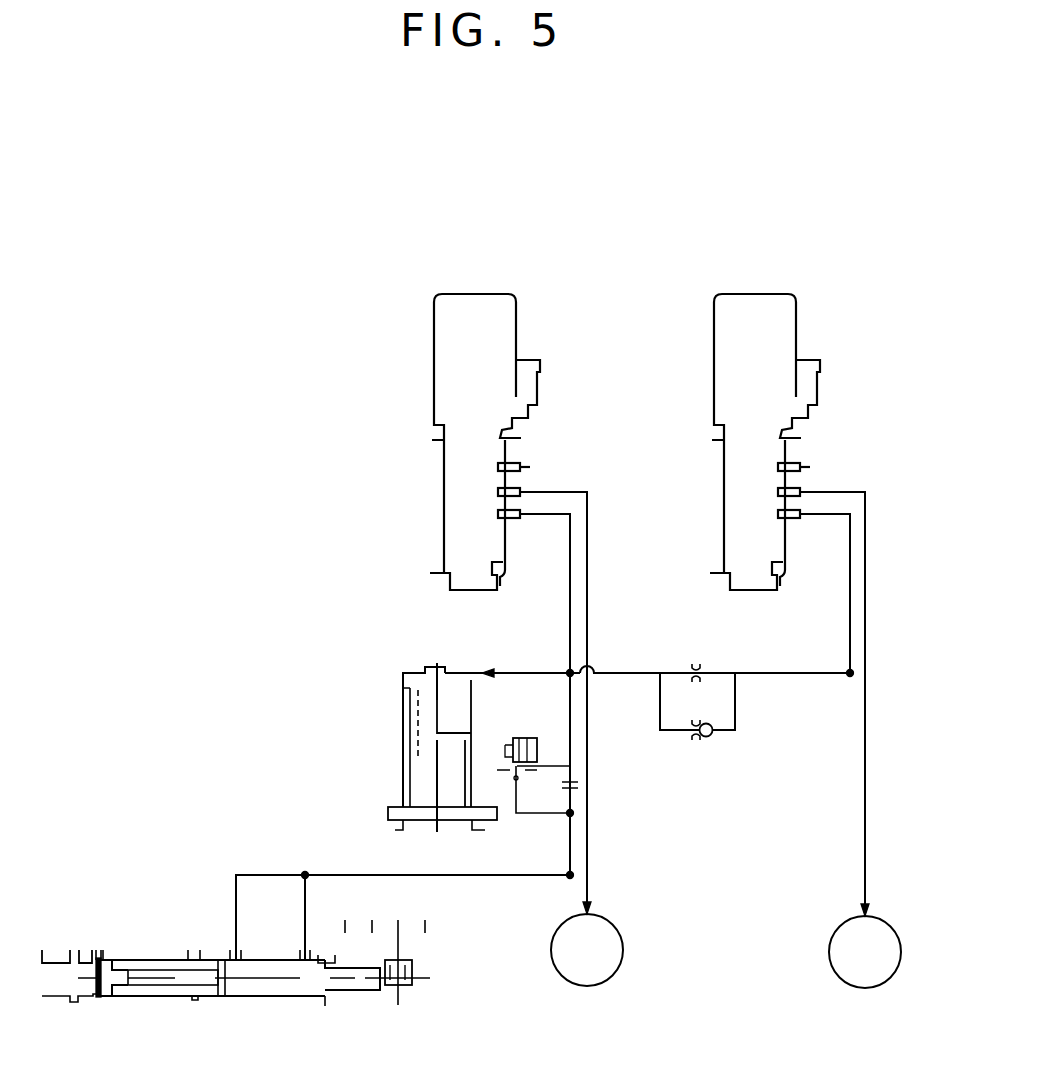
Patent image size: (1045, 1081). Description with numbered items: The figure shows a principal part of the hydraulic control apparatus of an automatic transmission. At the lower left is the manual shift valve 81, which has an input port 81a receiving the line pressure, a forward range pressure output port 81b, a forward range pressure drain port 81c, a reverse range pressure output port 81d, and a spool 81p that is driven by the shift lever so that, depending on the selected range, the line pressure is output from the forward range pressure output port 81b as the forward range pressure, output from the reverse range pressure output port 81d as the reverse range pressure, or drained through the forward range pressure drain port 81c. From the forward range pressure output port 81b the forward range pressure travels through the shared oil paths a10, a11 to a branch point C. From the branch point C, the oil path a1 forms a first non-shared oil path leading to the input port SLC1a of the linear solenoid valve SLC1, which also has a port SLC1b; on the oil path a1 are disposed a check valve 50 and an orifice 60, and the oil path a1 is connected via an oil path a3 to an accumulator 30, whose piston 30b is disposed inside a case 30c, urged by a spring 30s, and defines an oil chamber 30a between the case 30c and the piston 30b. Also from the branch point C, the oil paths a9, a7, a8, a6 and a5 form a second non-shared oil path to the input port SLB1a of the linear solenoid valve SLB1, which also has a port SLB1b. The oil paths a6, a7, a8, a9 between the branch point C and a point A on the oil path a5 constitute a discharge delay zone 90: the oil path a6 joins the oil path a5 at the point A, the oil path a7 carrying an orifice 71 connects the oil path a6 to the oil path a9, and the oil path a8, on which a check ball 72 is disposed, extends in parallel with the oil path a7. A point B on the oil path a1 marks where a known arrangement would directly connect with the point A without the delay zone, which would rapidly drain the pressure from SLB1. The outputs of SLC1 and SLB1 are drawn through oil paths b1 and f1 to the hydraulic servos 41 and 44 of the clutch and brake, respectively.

The accumulator 30 is at (429, 728).
The oil chamber 30a is at (438, 665).
The piston 30b is at (462, 726).
The case 30c is at (402, 705).
The spring 30s is at (412, 780).
The check valve 50 is at (528, 738).
The orifice 60 is at (563, 787).
The orifice 71 is at (696, 665).
The check ball 72 is at (707, 738).
The discharge delay zone 90 is at (853, 800).
The clutch C-1 hydraulic servo 41 is at (603, 914).
The brake B-1 hydraulic servo 44 is at (878, 917).
The manual shift valve 81 is at (238, 939).
The input port 81a is at (192, 948).
The forward range pressure output port 81b is at (242, 948).
The forward range pressure drain port 81c is at (378, 964).
The reverse range pressure output port 81d is at (104, 948).
The spool 81p is at (263, 990).
The linear solenoid valve SLC1 is at (485, 429).
The input port SLC1a is at (524, 519).
The feedback port of SLC1 SLC1b is at (523, 488).
The linear solenoid valve SLB1 is at (765, 429).
The input port SLB1a is at (804, 519).
The feedback port of SLB1 SLB1b is at (803, 488).
The oil path a1 is at (568, 608).
The oil path a3 is at (510, 671).
The oil path a5 is at (848, 625).
The oil path a6 is at (812, 680).
The oil path a7 is at (713, 671).
The oil path a8 is at (737, 708).
The oil path a9 is at (610, 671).
The oil path a10 is at (490, 877).
The oil path a11 is at (566, 845).
The oil passage b1 is at (590, 530).
The oil passage f1 is at (868, 582).
The point A is at (846, 671).
The point B is at (567, 878).
The branch point C is at (567, 670).